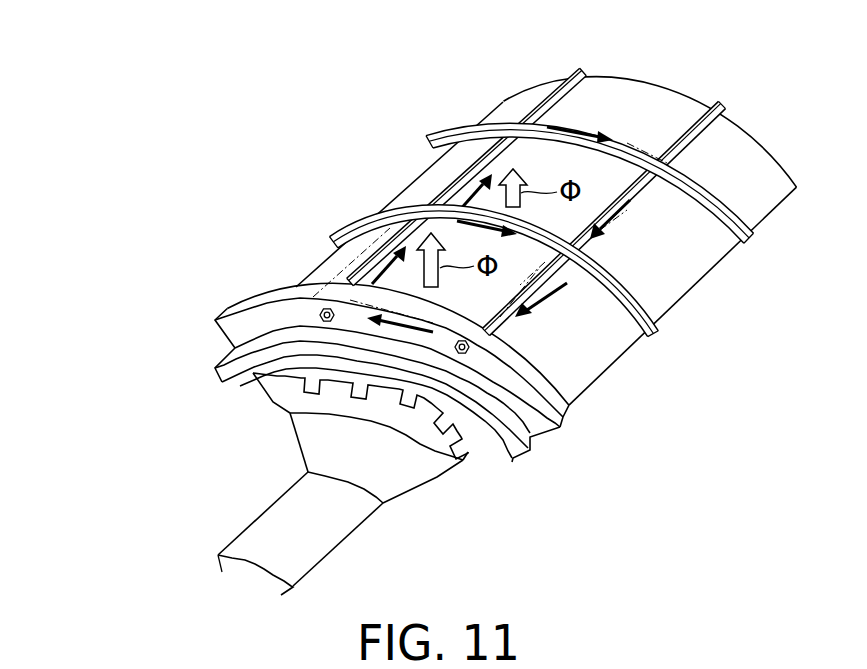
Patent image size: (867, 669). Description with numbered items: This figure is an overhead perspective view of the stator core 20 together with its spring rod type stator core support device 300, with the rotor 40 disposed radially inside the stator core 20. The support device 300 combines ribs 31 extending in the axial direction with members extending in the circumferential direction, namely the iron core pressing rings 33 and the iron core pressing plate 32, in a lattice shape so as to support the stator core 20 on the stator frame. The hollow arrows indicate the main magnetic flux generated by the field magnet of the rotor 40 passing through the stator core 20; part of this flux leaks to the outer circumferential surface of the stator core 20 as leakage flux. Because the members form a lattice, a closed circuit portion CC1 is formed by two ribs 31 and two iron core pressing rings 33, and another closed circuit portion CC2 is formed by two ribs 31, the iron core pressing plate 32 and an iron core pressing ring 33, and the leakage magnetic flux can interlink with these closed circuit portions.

The stator core support device 300 is at (206, 341).
The iron core pressing plate 32 is at (271, 289).
The iron core pressing ring 33 is at (466, 133).
The rib 31 is at (549, 97).
The stator core 20 is at (278, 414).
The rotor 40 is at (432, 498).
The closed circuit portion CC1 is at (640, 205).
The closed circuit portion CC2 is at (582, 288).